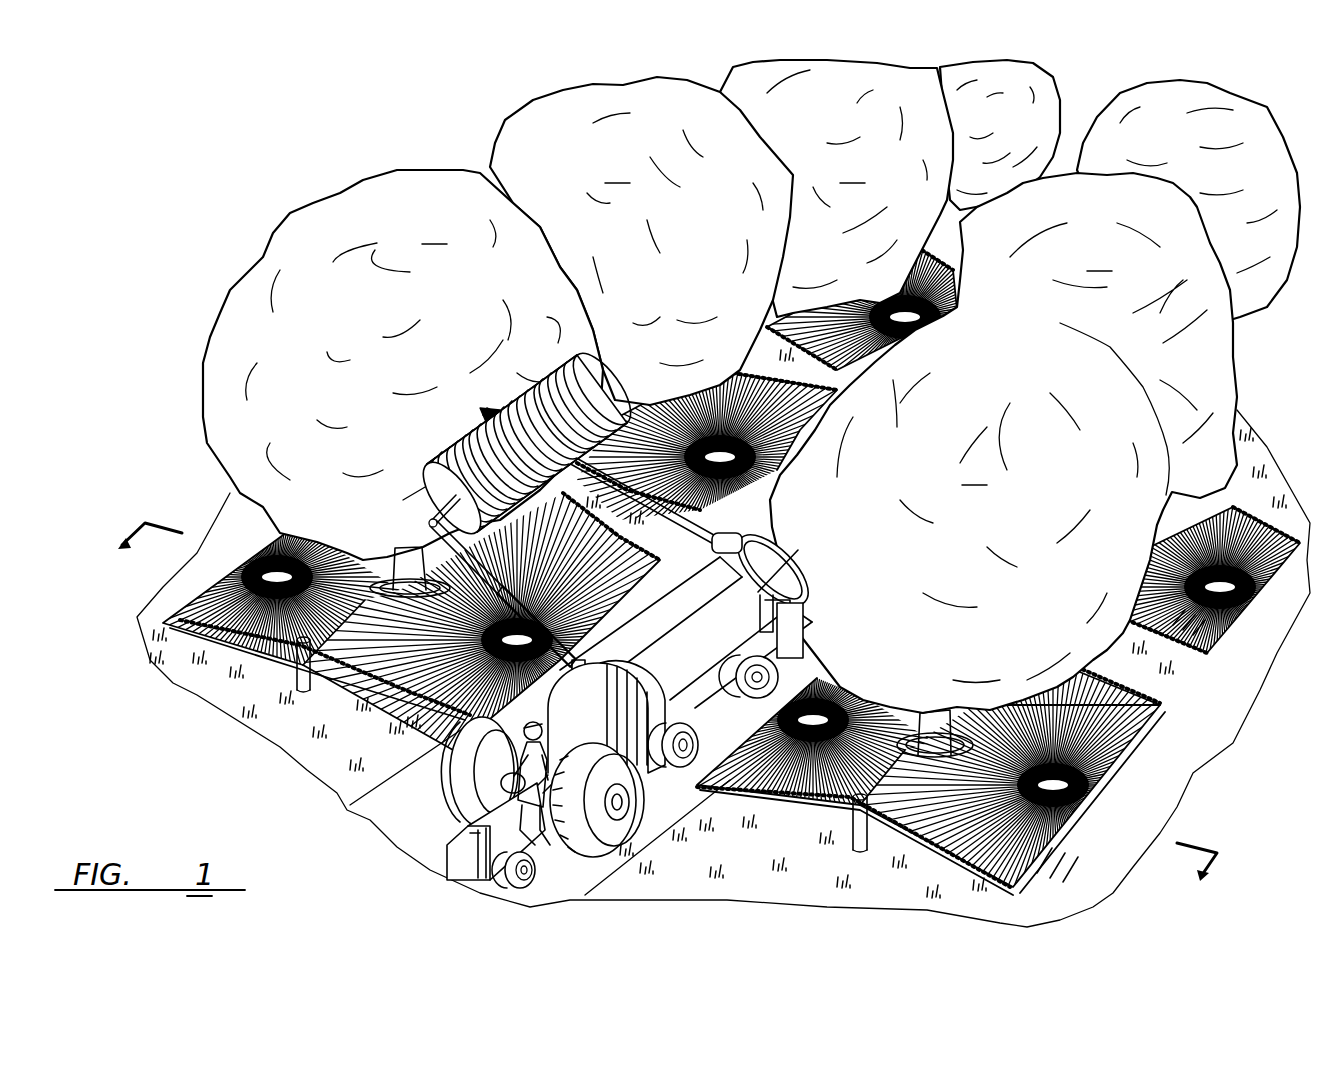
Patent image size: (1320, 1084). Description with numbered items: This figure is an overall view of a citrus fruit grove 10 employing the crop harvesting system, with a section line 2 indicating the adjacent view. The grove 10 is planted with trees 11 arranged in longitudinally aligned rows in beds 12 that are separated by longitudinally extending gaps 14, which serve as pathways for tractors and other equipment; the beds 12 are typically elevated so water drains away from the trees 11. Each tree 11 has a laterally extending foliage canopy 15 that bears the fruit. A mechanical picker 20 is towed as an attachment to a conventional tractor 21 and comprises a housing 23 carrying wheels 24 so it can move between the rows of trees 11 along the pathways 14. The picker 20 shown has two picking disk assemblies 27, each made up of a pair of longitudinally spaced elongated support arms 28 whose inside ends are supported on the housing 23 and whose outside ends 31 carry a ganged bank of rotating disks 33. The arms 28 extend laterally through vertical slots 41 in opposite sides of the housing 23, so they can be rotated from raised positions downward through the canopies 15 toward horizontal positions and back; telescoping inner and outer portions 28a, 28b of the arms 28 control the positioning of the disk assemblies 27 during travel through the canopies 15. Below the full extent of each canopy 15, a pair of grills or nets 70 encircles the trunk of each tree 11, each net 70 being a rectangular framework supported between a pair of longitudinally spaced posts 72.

The grove 10 is at (660, 543).
The trees 11 is at (730, 408).
The beds 12 is at (218, 700).
The gaps 14 is at (365, 820).
The foliage canopies 15 is at (1185, 688).
The mechanical picker 20 is at (669, 775).
The tractor 21 is at (532, 887).
The housing 23 is at (740, 533).
The wheels 24 is at (698, 745).
The picking disk assemblies 27 is at (410, 491).
The support arms 28 is at (690, 555).
The inner portion 28a is at (803, 655).
The outer portion 28b is at (780, 683).
The outside ends 31 is at (428, 526).
The rotating disks 33 is at (480, 410).
The vertical slots 41 is at (790, 626).
The nets 70 is at (228, 567).
The posts 72 is at (298, 662).
The section line 2- 2 is at (658, 718).